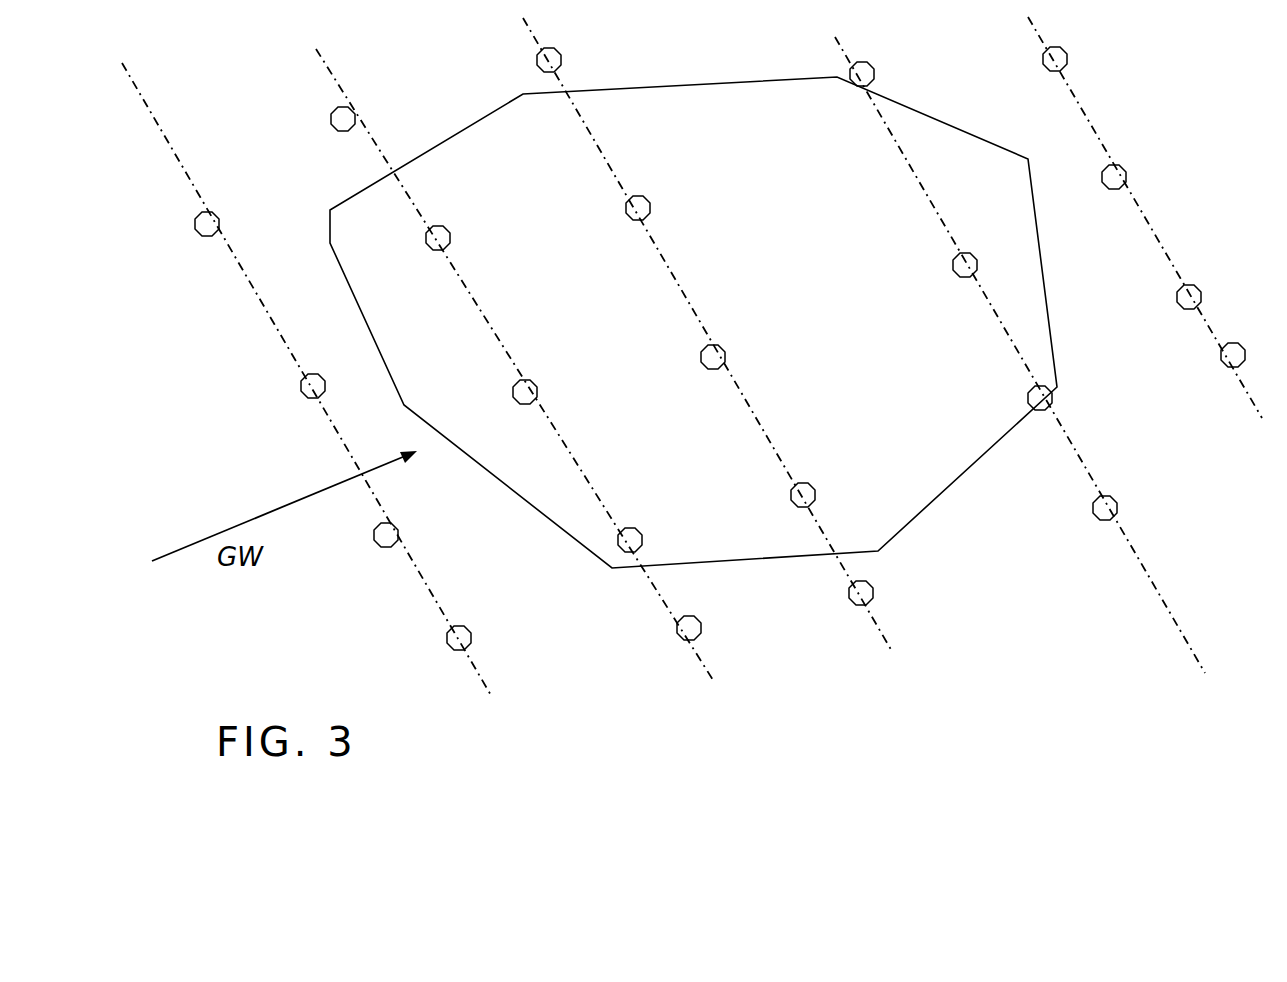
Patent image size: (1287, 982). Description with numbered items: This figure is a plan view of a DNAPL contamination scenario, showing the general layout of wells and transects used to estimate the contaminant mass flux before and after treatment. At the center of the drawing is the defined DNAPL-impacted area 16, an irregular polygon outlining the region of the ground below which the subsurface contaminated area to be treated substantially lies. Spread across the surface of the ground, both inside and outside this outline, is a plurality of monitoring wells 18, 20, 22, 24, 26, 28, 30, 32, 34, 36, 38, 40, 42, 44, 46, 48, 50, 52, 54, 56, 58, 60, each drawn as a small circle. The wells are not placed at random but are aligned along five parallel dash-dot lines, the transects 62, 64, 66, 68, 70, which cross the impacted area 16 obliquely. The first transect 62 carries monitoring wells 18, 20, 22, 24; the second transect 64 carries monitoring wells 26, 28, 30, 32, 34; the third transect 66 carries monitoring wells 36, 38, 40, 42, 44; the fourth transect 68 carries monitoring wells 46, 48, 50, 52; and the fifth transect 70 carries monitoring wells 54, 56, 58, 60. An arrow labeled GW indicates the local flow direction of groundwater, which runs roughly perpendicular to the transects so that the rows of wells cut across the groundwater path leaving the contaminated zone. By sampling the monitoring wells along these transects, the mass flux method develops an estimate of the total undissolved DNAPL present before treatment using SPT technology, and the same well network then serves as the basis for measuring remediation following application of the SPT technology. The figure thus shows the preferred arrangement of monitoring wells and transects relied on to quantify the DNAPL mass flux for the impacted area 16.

The DNAPL-impacted area 16 is at (910, 520).
The monitoring well 18 is at (475, 631).
The monitoring well 20 is at (402, 528).
The monitoring well 22 is at (320, 373).
The monitoring well 24 is at (214, 211).
The monitoring well 26 is at (709, 631).
The monitoring well 28 is at (649, 538).
The monitoring well 30 is at (545, 390).
The monitoring well 32 is at (456, 238).
The monitoring well 34 is at (358, 114).
The monitoring well 36 is at (884, 593).
The monitoring well 38 is at (818, 494).
The monitoring well 40 is at (731, 357).
The monitoring well 42 is at (653, 208).
The monitoring well 44 is at (564, 60).
The monitoring well 46 is at (1124, 508).
The monitoring well 48 is at (1055, 393).
The monitoring well 50 is at (972, 253).
The monitoring well 52 is at (876, 68).
The monitoring well 54 is at (1218, 362).
The monitoring well 56 is at (1174, 297).
The monitoring well 58 is at (1092, 177).
The monitoring well 60 is at (1032, 59).
The transect 62 is at (492, 697).
The transect 64 is at (713, 680).
The transect 66 is at (893, 653).
The transect 68 is at (1190, 653).
The transect 70 is at (1252, 400).